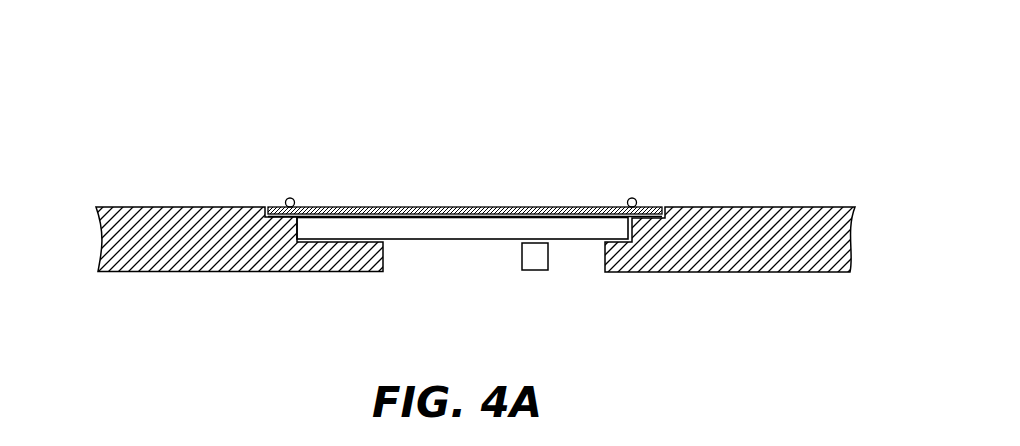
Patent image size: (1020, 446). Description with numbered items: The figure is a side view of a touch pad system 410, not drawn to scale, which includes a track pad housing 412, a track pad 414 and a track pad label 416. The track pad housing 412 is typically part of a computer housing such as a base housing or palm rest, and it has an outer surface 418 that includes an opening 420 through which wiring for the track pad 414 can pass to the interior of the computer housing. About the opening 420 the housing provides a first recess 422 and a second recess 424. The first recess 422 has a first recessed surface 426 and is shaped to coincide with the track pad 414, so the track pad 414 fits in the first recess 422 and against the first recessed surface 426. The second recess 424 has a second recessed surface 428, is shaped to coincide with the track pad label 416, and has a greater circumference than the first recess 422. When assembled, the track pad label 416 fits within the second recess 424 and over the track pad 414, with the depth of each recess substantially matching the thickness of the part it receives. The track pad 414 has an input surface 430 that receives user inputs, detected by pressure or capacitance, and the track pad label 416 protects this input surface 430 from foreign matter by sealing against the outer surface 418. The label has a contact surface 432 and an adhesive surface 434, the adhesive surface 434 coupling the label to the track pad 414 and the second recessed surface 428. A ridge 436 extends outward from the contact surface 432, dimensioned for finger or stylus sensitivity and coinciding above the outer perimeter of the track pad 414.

The touch pad system 410 is at (140, 70).
The track pad housing 412 is at (203, 205).
The track pad 414 is at (408, 227).
The track pad label 416 is at (473, 207).
The outer surface 418 is at (773, 207).
The opening 420 is at (473, 257).
The first recess 422 is at (276, 232).
The second recess 424 is at (250, 205).
The first recessed surface 426 is at (339, 243).
The second recessed surface 428 is at (277, 205).
The input surface 430 is at (560, 218).
The contact surface 432 is at (403, 207).
The adhesive surface 434 is at (530, 207).
The ridge 436 is at (632, 198).